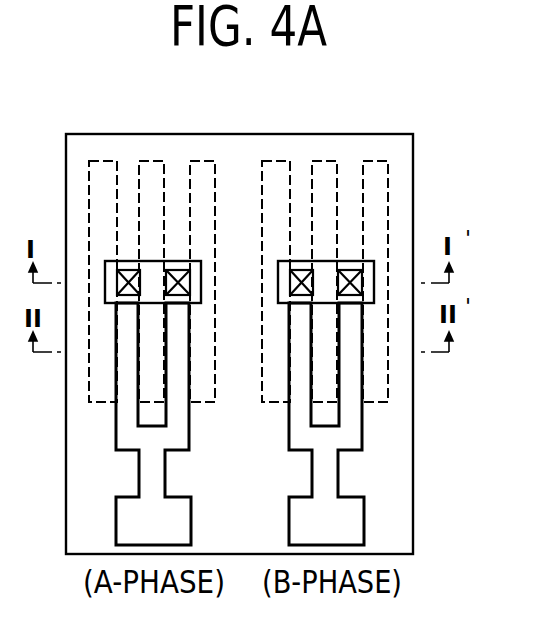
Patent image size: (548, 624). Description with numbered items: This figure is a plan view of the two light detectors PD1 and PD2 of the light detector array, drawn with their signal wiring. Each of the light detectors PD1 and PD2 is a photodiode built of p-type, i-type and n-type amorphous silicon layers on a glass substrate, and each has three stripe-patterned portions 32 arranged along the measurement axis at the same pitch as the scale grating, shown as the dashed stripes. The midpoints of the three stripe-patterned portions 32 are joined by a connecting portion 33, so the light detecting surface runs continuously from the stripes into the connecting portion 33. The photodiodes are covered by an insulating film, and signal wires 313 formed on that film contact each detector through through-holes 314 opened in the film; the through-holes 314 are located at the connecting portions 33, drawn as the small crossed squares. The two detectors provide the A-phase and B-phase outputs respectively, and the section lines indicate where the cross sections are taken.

The stripe-patterned portions 32 is at (247, 234).
The light detector PD1 is at (158, 152).
The light detector PD2 is at (321, 154).
The connecting portion 33 is at (106, 282).
The through-holes 314 is at (132, 270).
The signal wires 313 is at (117, 425).